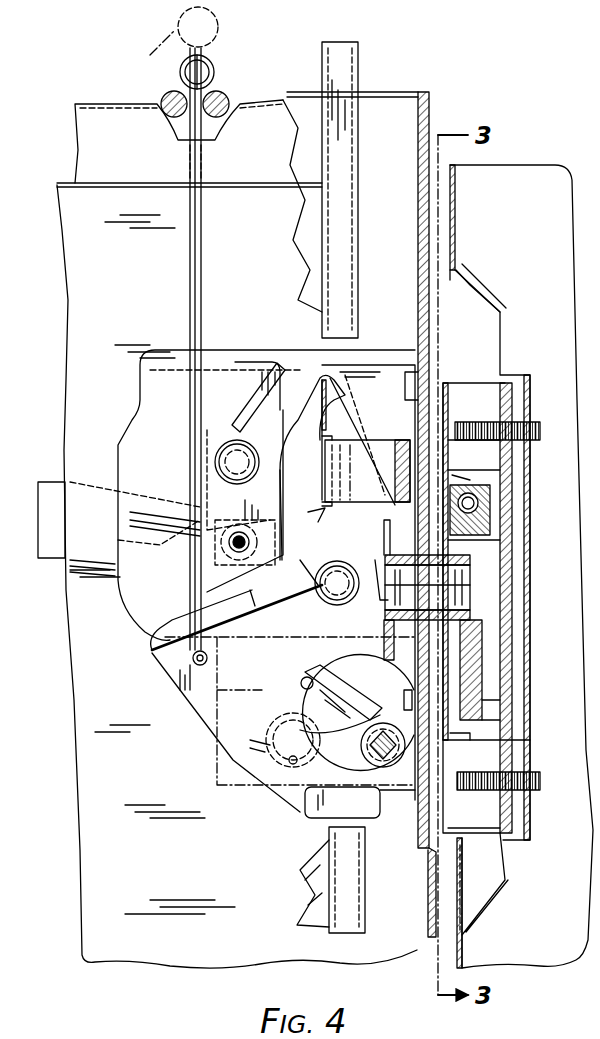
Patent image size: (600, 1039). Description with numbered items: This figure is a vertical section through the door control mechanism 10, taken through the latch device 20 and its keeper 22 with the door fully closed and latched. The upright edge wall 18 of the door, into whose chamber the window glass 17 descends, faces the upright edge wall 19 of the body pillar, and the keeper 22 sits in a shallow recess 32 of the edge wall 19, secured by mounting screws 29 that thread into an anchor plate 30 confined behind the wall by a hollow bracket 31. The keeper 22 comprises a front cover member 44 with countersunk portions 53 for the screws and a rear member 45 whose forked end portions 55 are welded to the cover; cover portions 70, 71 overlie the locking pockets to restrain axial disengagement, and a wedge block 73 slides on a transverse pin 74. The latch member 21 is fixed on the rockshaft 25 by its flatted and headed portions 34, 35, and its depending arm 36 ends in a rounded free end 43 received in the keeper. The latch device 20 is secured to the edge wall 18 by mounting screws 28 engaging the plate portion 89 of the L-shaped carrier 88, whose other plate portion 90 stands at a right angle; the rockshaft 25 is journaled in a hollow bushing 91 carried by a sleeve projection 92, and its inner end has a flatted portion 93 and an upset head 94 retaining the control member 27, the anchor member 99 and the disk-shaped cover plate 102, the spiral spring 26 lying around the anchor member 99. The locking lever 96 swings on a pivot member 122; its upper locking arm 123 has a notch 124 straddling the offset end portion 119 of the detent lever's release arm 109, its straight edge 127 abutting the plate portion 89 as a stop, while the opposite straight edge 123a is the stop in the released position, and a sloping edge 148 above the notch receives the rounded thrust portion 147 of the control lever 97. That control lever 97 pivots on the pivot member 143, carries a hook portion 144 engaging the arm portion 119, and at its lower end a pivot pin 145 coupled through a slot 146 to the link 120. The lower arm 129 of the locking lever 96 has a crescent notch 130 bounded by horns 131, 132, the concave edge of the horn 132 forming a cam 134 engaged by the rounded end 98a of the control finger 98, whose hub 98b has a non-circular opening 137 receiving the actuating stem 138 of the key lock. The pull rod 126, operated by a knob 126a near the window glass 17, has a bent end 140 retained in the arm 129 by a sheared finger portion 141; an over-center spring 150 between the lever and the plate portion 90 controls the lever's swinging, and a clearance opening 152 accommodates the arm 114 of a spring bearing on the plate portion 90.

The door control mechanism 10 is at (272, 675).
The window glass 17 is at (290, 229).
The upright edge wall 18 is at (431, 108).
The upright edge wall 19 is at (458, 228).
The latch device 20 is at (195, 720).
The latch member 21 is at (480, 627).
The keeper 22 is at (474, 381).
The rockshaft 25 is at (478, 597).
The spiral spring 26 is at (398, 647).
The control member 27 is at (402, 528).
The mounting screws 28 is at (428, 389).
The mounting screws 29 is at (535, 422).
The anchor plate 30 is at (505, 477).
The hollow bracket 31 is at (505, 502).
The shallow recess 32 is at (472, 297).
The flatted portion 34 is at (478, 575).
The headed portion 35 is at (478, 587).
The arm 36 is at (484, 669).
The free end 43 is at (480, 730).
The front member 44 is at (468, 465).
The rear member 45 is at (505, 465).
The countersunk portions 53 is at (474, 561).
The forked end portions 55 is at (458, 745).
The cover portion 70 is at (500, 542).
The cover portion 71 is at (484, 702).
The wedge block 73 is at (492, 517).
The transverse pin 74 is at (478, 500).
The carrier 88 is at (360, 364).
The plate portion 89 is at (402, 479).
The plate portion 90 is at (385, 369).
The hollow bushing 91 is at (427, 587).
The sleeve projection 92 is at (484, 647).
The flatted portion 93 is at (390, 607).
The upset head 94 is at (380, 572).
The locking lever 96 is at (178, 697).
The control lever 97 is at (282, 472).
The control finger 98 is at (288, 731).
The rounded end 98a is at (302, 681).
The hub 98b is at (360, 757).
The anchor member 99 is at (427, 594).
The cover plate 102 is at (386, 637).
The release arm 109 is at (400, 459).
The arm 114 is at (363, 472).
The offset outer end portion 119 is at (324, 461).
The link 120 is at (52, 489).
The pivot member 122 is at (322, 585).
The upper locking arm 123 is at (340, 417).
The straight edge 123a is at (350, 442).
The locking notch 124 is at (324, 503).
The pull rod 126 is at (190, 272).
The knob 126a is at (182, 71).
The straight edge 127 is at (410, 677).
The arm 129 is at (217, 737).
The notch 130 is at (330, 662).
The horn 131 is at (406, 652).
The horn 132 is at (297, 819).
The cam 134 is at (342, 802).
The non-circular opening 137 is at (400, 799).
The actuating stem 138 is at (372, 742).
The bent end 140 is at (168, 687).
The finger portion 141 is at (178, 629).
The pivot member 143 is at (246, 437).
The hook portion 144 is at (262, 365).
The pivot pin 145 is at (232, 548).
The slot 146 is at (198, 500).
The rounded thrust portion 147 is at (295, 362).
The sloping edge 148 is at (300, 402).
The spring 150 is at (215, 775).
The clearance opening 152 is at (312, 521).